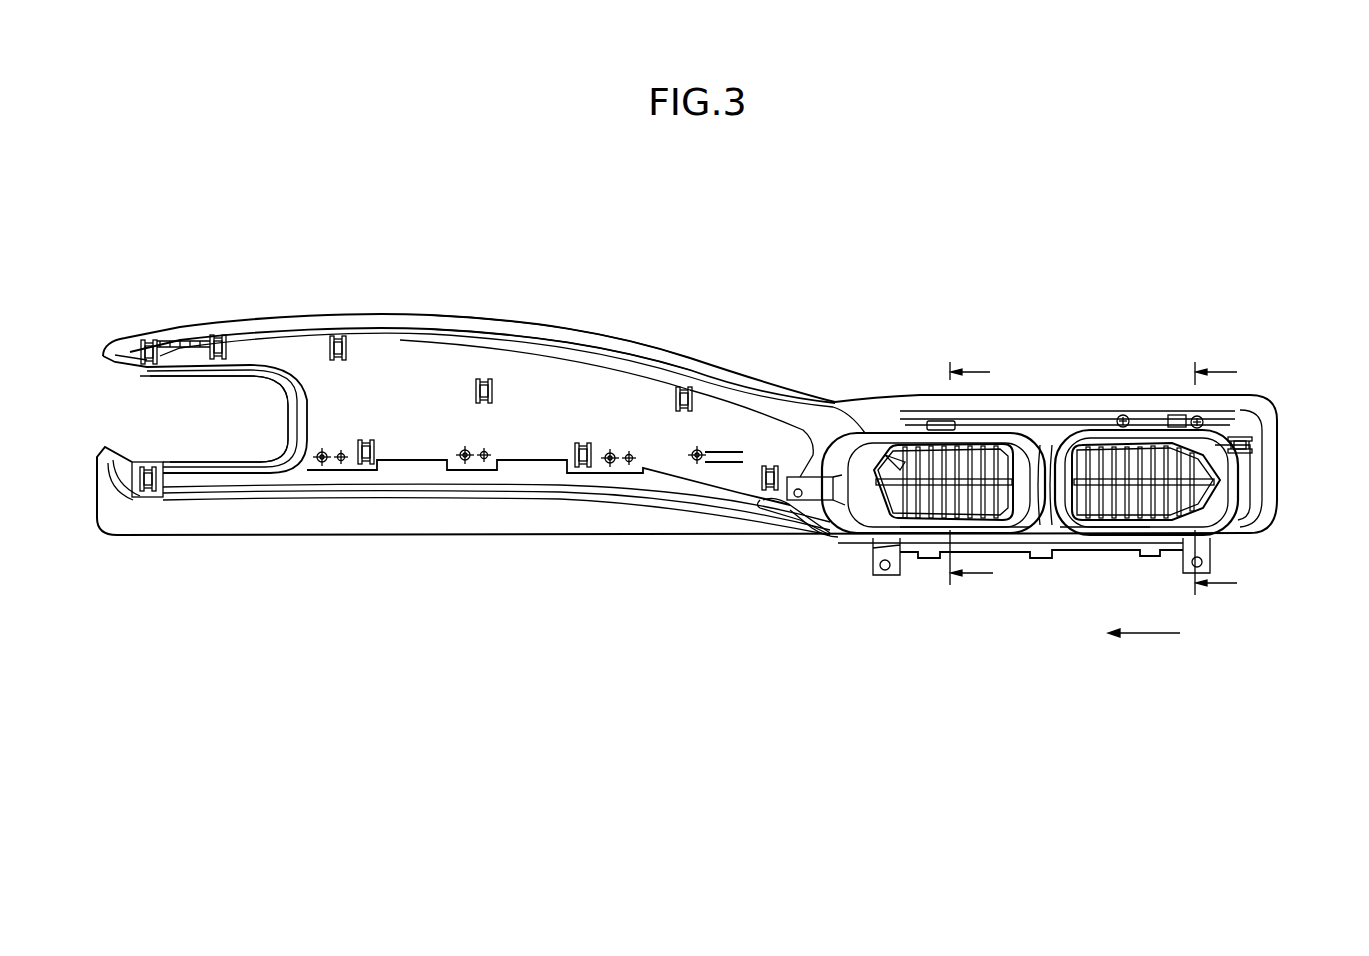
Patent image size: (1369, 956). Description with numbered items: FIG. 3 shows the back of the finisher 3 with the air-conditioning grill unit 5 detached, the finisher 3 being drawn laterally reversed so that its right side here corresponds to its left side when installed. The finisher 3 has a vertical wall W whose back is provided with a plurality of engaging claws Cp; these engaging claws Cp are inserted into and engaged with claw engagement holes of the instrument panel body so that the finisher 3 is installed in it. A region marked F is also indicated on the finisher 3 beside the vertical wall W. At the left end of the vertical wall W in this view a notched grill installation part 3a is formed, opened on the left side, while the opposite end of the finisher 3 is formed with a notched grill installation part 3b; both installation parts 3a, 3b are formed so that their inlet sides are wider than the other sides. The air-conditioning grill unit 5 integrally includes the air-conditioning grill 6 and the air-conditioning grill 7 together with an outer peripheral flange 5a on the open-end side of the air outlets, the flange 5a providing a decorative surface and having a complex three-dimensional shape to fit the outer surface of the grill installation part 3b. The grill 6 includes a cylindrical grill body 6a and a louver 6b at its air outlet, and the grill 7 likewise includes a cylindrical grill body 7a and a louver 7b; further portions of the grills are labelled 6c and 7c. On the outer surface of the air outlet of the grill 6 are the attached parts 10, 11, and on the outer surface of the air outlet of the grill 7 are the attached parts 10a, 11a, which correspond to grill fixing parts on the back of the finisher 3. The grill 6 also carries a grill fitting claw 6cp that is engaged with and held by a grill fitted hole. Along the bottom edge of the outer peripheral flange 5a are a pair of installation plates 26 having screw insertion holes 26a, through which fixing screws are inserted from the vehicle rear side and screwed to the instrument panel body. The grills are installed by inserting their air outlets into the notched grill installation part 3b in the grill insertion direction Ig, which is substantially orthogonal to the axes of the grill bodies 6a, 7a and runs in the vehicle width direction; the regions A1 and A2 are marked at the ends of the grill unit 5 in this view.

The finisher 3 is at (607, 252).
The grill installation part 3a is at (162, 422).
The grill installation part 3b is at (815, 535).
The air-conditioning grill unit 5 is at (1079, 466).
The outer peripheral flange 5a is at (1265, 500).
The air-conditioning grill 6 is at (1093, 423).
The grill body 6a is at (1102, 530).
The louver 6b is at (1220, 480).
The grille lower portion 6c is at (1130, 522).
The grill fitting claw 6cp is at (1253, 440).
The air-conditioning grill 7 is at (987, 427).
The grill body 7a is at (838, 540).
The louver 7b is at (905, 455).
The grille lower edge 7c is at (933, 520).
The attached part 10 is at (1122, 412).
The attached part 10a is at (800, 475).
The attached part 11 is at (1178, 412).
The attached part 11a is at (925, 418).
The installation plate 26 is at (873, 578).
The screw insertion hole 26a is at (886, 572).
The engaging claw Cp is at (147, 343).
The vertical wall W is at (520, 395).
The flange of bumper F is at (591, 340).
The region A1 is at (1217, 477).
The region A2 is at (972, 471).
The grill insertion direction Ig is at (1156, 636).